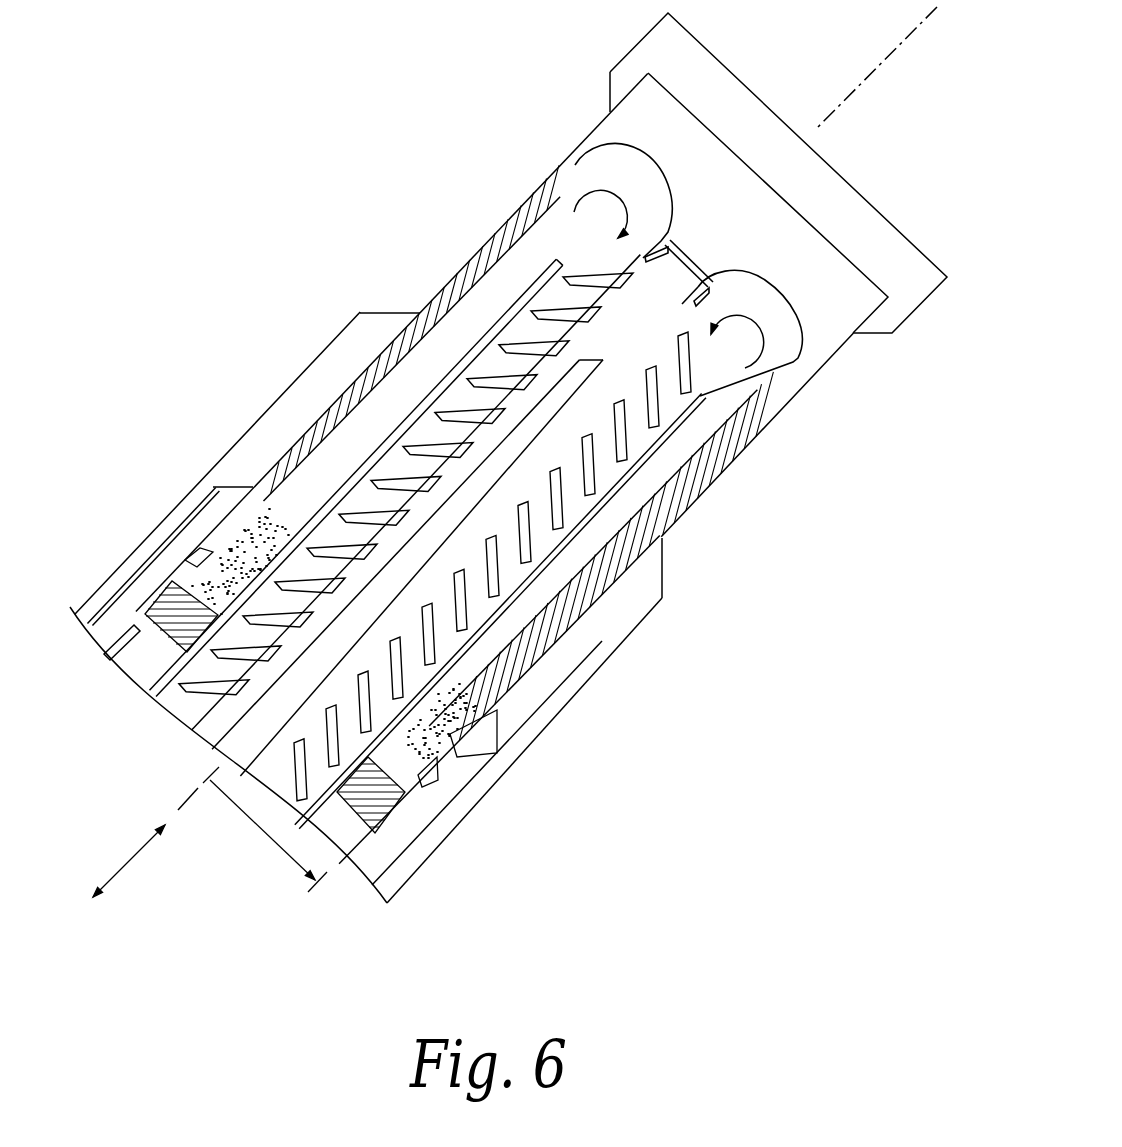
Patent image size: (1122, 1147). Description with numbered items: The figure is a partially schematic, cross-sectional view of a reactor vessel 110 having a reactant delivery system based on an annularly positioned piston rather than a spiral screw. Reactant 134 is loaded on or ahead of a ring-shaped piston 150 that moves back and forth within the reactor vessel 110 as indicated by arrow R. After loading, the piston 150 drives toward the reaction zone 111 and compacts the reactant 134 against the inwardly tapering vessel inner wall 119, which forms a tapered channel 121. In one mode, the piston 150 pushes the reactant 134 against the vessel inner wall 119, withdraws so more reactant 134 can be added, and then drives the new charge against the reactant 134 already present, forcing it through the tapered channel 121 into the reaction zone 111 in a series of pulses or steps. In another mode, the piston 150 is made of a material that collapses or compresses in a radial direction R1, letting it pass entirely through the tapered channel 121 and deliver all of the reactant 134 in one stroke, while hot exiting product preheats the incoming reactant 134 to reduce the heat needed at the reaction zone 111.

The reactor vessel 110 is at (303, 117).
The reaction zone 111 is at (640, 200).
The vessel inner wall 119 is at (572, 585).
The tapered channel 121 is at (647, 468).
The reactant 134 is at (428, 733).
The ring-shaped piston 150 is at (187, 607).
The arrow R is at (130, 860).
The radial direction R1 is at (263, 833).